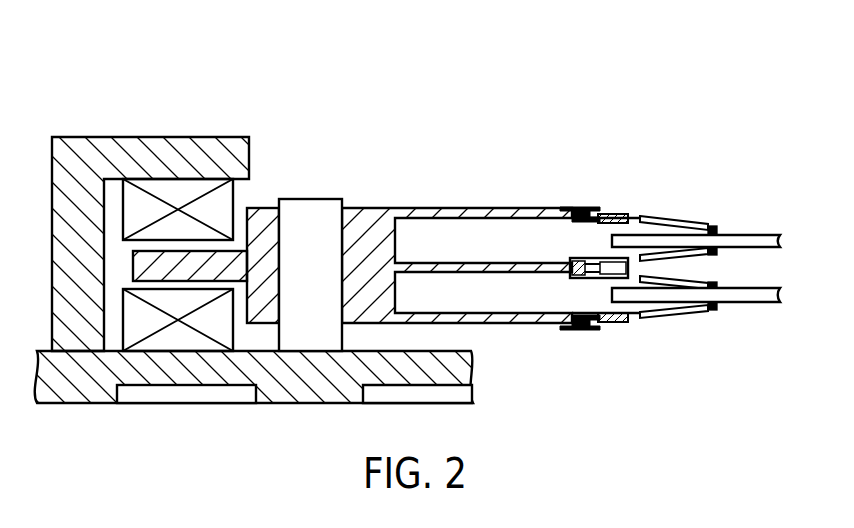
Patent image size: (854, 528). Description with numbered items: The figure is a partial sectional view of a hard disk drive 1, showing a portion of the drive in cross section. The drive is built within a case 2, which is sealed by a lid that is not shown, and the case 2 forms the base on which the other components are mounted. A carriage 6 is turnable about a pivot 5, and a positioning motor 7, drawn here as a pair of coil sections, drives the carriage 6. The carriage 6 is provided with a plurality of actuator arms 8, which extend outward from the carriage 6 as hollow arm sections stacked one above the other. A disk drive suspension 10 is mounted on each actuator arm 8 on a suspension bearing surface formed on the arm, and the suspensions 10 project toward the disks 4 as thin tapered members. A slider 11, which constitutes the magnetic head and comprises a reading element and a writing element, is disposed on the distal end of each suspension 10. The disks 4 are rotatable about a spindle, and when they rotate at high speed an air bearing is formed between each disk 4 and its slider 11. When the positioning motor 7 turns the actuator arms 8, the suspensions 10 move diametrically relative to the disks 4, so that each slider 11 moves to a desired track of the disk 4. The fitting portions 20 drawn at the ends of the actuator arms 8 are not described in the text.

The hard disk drive 1 is at (191, 92).
The case 2 is at (88, 403).
The disk 4 is at (760, 238).
The pivot 5 is at (311, 207).
The carriage 6 is at (443, 200).
The positioning motor 7 is at (176, 340).
The actuator arm 8 is at (548, 207).
The disk drive suspension 10 is at (690, 255).
The slider 11 is at (712, 227).
The fitting 20 is at (607, 212).